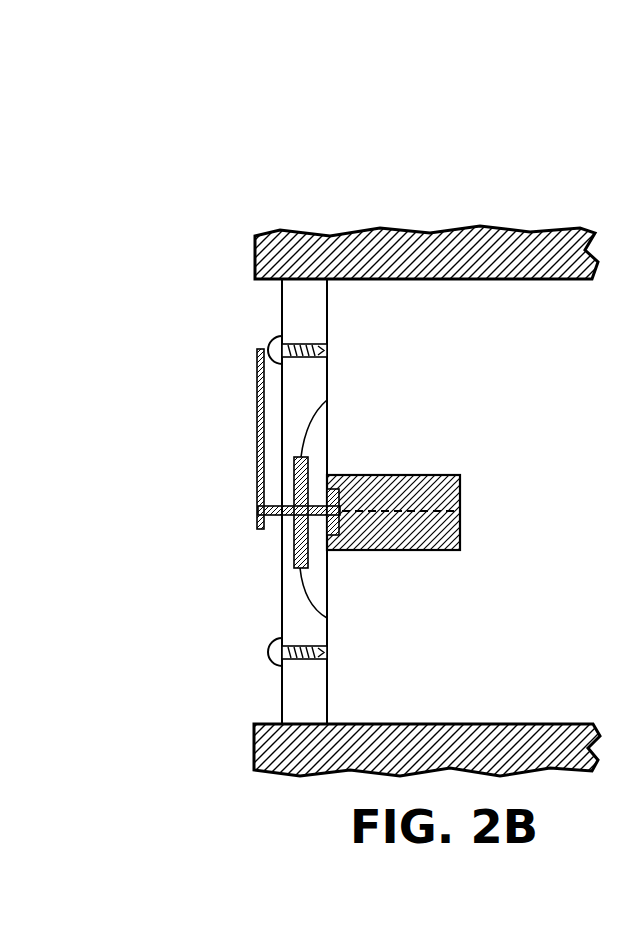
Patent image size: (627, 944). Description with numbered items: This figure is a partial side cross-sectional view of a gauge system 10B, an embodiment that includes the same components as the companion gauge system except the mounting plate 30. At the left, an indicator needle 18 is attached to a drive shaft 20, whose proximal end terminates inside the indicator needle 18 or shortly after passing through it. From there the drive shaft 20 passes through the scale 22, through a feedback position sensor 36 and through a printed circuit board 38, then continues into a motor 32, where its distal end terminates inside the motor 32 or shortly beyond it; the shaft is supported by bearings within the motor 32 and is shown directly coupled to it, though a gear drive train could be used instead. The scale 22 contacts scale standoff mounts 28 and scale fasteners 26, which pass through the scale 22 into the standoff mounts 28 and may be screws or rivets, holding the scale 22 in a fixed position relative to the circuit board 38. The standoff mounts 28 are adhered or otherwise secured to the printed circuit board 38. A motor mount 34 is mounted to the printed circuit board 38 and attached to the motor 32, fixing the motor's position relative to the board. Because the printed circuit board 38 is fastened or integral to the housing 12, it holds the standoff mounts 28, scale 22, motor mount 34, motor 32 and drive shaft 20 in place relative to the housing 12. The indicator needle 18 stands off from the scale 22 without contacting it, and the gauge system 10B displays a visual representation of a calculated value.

The gauge system 10B is at (178, 122).
The housing 12 is at (481, 245).
The indicator needle 18 is at (257, 413).
The drive shaft 20 is at (285, 505).
The scale 22 is at (282, 580).
The scale fasteners 26 is at (269, 649).
The scale standoff mounts 28 is at (283, 343).
The mounting plate 30 is at (327, 306).
The motor 32 is at (420, 475).
The motor mount 34 is at (340, 503).
The feedback position sensor 36 is at (308, 470).
The printed circuit board 38 is at (327, 682).